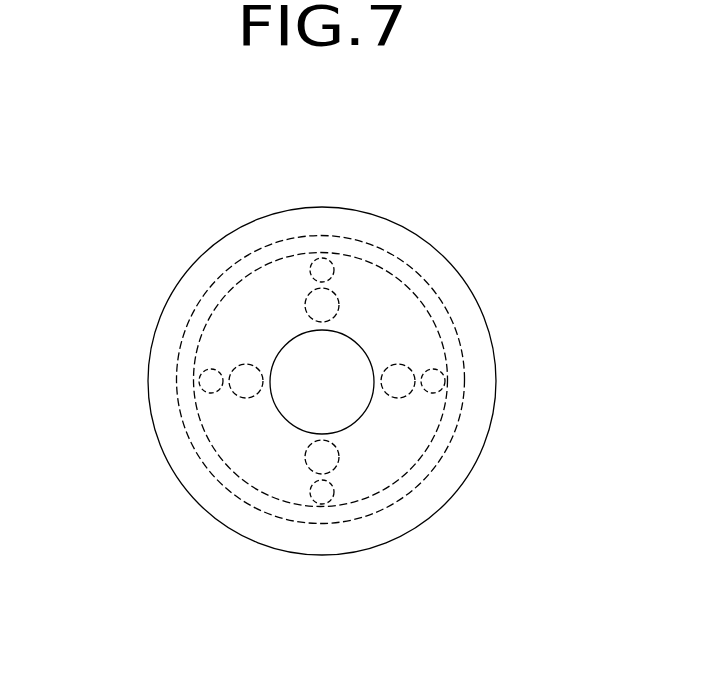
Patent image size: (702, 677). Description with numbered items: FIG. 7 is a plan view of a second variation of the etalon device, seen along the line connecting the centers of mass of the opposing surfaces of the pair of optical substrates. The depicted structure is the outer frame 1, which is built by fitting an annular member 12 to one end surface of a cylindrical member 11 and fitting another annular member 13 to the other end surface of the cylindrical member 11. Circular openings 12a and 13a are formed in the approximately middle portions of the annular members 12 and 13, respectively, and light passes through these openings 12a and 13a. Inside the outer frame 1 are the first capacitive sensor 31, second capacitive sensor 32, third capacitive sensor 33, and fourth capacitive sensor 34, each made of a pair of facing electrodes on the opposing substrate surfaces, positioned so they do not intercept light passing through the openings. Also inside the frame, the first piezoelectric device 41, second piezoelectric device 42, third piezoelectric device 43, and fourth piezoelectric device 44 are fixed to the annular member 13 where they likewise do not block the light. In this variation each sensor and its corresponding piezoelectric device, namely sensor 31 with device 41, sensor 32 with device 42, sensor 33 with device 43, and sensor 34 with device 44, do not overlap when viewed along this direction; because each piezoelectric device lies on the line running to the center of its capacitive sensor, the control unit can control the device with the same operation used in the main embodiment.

The outer frame 1 is at (78, 443).
The cylindrical member 11 is at (190, 480).
The annular member 12 is at (222, 468).
The annular member 13 is at (221, 515).
The circular opening 12a is at (353, 363).
The circular opening 13a is at (298, 398).
The first capacitive sensor 31 is at (244, 388).
The second capacitive sensor 32 is at (318, 304).
The third capacitive sensor 33 is at (400, 378).
The fourth capacitive sensor 34 is at (328, 462).
The first piezoelectric device 41 is at (209, 381).
The second piezoelectric device 42 is at (325, 270).
The third piezoelectric device 43 is at (437, 387).
The fourth piezoelectric device 44 is at (321, 493).